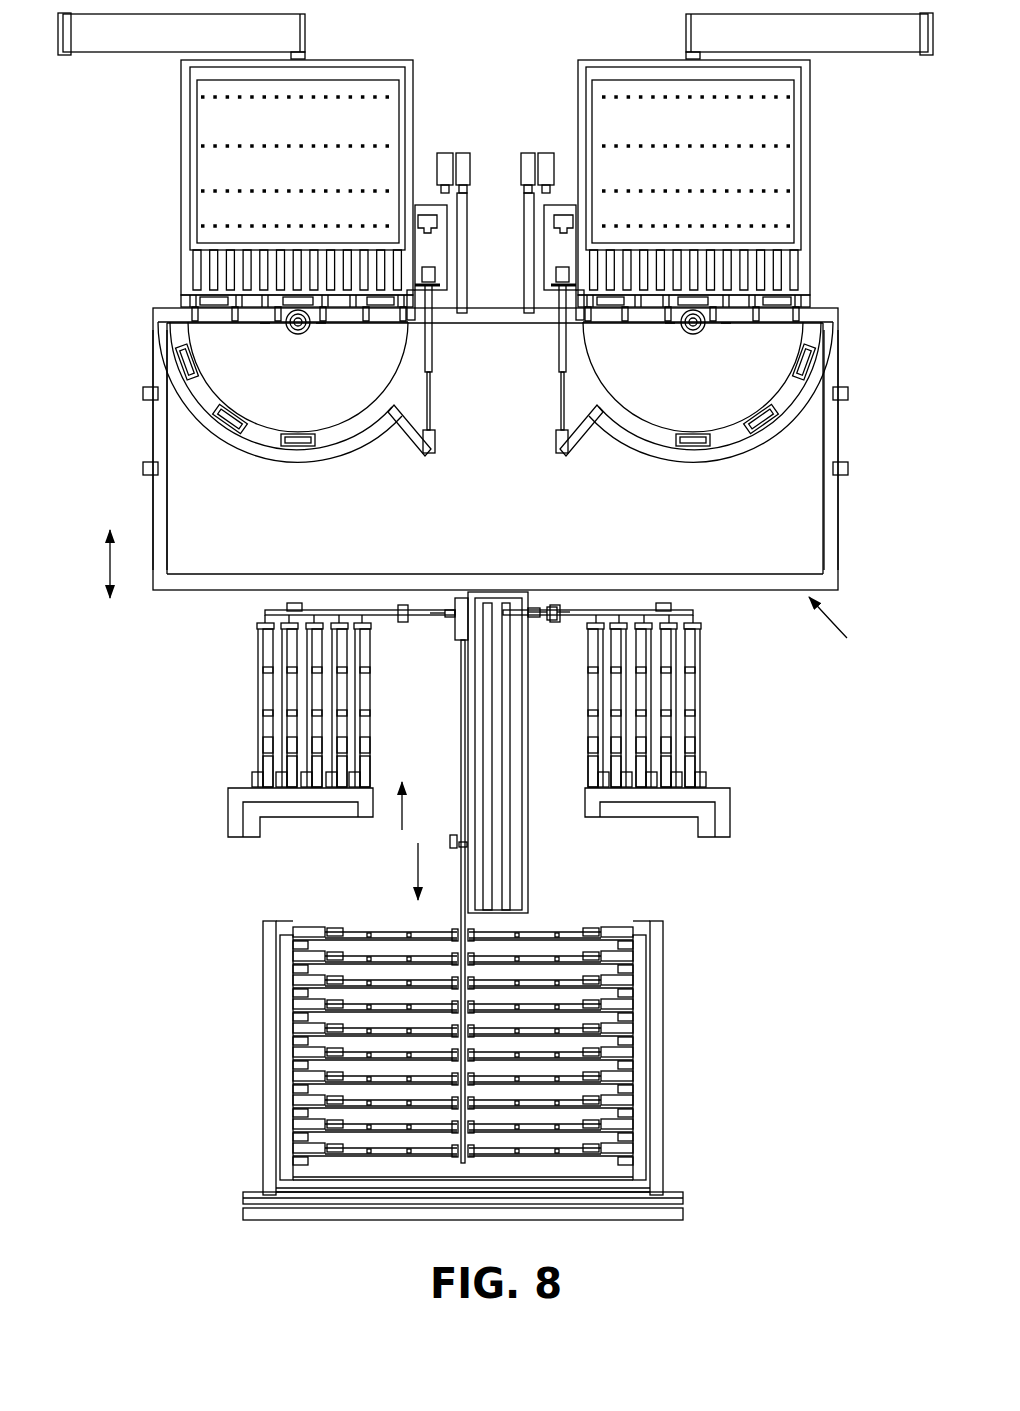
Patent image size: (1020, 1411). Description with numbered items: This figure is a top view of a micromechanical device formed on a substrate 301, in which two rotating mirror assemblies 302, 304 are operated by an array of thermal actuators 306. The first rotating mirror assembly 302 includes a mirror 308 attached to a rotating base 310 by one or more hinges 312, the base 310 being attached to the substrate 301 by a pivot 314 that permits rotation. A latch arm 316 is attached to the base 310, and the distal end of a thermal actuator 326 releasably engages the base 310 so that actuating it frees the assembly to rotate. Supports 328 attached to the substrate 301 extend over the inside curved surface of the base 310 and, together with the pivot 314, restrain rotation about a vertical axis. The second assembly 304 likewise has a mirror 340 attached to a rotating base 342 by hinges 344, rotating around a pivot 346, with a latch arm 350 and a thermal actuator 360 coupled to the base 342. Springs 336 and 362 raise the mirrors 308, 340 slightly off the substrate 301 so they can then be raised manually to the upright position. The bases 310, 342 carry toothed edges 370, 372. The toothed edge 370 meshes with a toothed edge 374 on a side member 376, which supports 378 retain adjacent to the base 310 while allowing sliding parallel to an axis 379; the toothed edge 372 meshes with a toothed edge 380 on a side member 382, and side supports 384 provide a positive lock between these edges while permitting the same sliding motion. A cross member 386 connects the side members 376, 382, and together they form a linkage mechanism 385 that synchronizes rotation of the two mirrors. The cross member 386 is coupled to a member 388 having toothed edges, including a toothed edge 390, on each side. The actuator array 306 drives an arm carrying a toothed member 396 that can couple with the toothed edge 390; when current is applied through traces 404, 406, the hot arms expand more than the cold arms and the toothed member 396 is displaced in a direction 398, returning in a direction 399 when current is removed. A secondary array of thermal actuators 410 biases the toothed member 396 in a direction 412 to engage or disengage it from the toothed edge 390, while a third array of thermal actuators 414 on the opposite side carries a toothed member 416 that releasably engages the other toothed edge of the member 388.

The substrate 301 is at (783, 946).
The rotating mirror assembly 302 is at (244, 190).
The rotating mirror assembly 304 is at (747, 190).
The array of thermal actuators 306 is at (505, 1086).
The mirror 308 is at (203, 172).
The rotating base 310 is at (290, 410).
The hinges 312 is at (183, 301).
The pivot 314 is at (302, 333).
The latch arm 316 is at (433, 361).
The thermal actuator 326 is at (446, 152).
The supports 328 is at (292, 430).
The spring 336 is at (299, 33).
The mirror 340 is at (790, 172).
The rotating base 342 is at (708, 413).
The hinges 344 is at (808, 301).
The pivot 346 is at (694, 333).
The latch arm 350 is at (559, 397).
The thermal actuator 360 is at (527, 152).
The spring 362 is at (694, 34).
The toothed edge 370 is at (253, 452).
The toothed edge 372 is at (738, 452).
The toothed edge 374 is at (168, 536).
The side member 376 is at (160, 431).
The supports 378 is at (147, 391).
The axis 379 is at (82, 560).
The toothed edge 380 is at (497, 449).
The side member 382 is at (838, 431).
The side supports 384 is at (846, 391).
The linkage mechanism 385 is at (851, 626).
The cross member 386 is at (331, 575).
The member 388 is at (498, 860).
The toothed edge 390 is at (470, 748).
The toothed member 396 is at (459, 630).
The direction 398 is at (402, 820).
The direction 399 is at (418, 850).
The trace 404 is at (685, 1196).
The trace 406 is at (685, 1216).
The secondary array of thermal actuators 410 is at (258, 700).
The direction 412 is at (242, 630).
The third array of thermal actuators 414 is at (700, 686).
The toothed member 416 is at (551, 622).